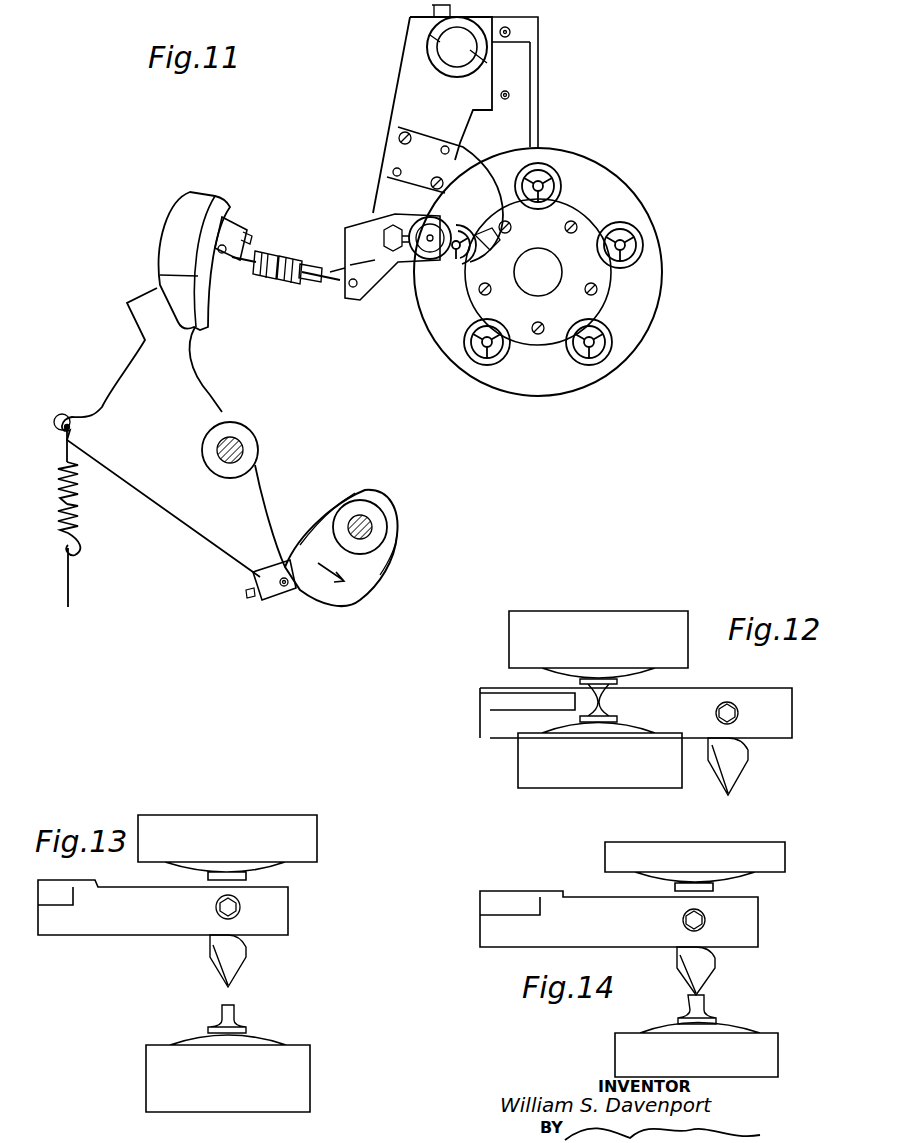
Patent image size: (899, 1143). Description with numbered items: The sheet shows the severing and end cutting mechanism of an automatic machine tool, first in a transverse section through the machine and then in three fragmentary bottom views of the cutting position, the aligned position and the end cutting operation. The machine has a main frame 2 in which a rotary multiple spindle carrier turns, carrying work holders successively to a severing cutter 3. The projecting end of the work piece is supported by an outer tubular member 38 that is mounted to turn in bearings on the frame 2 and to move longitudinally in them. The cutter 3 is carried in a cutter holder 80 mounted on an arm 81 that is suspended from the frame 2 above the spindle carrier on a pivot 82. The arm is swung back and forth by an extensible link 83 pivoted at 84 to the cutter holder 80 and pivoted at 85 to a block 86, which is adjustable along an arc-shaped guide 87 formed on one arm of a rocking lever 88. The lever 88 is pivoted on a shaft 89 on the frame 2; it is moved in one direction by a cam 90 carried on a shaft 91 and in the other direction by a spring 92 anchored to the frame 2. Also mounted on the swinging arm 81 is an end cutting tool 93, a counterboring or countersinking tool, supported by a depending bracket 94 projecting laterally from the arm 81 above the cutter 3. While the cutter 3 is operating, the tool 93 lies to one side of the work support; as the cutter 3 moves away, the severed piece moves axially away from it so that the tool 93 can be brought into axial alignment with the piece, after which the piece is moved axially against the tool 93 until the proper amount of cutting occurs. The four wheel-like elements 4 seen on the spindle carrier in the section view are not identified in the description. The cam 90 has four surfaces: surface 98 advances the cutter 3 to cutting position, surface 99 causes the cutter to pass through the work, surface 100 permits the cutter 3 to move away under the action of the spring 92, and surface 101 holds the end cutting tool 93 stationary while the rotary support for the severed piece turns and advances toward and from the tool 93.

In FIG. 11, the frame 2 is at (538, 33).
In FIG. 12, the severing cutter 3 is at (600, 695).
In FIG. 13, the severing cutter 3 is at (108, 887).
In FIG. 14, the severing cutter 3 is at (550, 900).
In FIG. 11, the roller wheel 4 is at (553, 158).
In FIG. 12, the roller wheel 4 is at (634, 620).
In FIG. 13, the roller wheel 4 is at (315, 838).
In FIG. 14, the roller wheel 4 is at (724, 852).
In FIG. 12, the outer tubular member 38 is at (641, 778).
In FIG. 13, the outer tubular member 38 is at (147, 1070).
In FIG. 14, the outer tubular member 38 is at (615, 1057).
In FIG. 11, the cutter holder 80 is at (412, 258).
In FIG. 11, the arm 81 is at (408, 101).
In FIG. 11, the pivot 82 is at (470, 50).
In FIG. 11, the extensible link 83 is at (283, 280).
In FIG. 11, the pivot 84 is at (355, 290).
In FIG. 11, the pivot 85 is at (235, 235).
In FIG. 11, the block 86 is at (225, 244).
In FIG. 11, the arc-shaped guide 87 is at (175, 270).
In FIG. 11, the rocking lever 88 is at (200, 382).
In FIG. 11, the shaft 89 is at (243, 450).
In FIG. 11, the cam 90 is at (357, 603).
In FIG. 11, the shaft 91 is at (375, 526).
In FIG. 11, the spring 92 is at (58, 512).
In FIG. 11, the end cutting tool 93 is at (486, 250).
In FIG. 12, the end cutting tool 93 is at (727, 770).
In FIG. 13, the end cutting tool 93 is at (236, 968).
In FIG. 14, the end cutting tool 93 is at (704, 980).
In FIG. 11, the depending bracket 94 is at (468, 165).
In FIG. 12, the depending bracket 94 is at (700, 702).
In FIG. 13, the depending bracket 94 is at (139, 928).
In FIG. 14, the depending bracket 94 is at (580, 900).
In FIG. 11, the cam surface 98 is at (392, 578).
In FIG. 11, the cam surface 99 is at (320, 596).
In FIG. 11, the cam surface 100 is at (310, 520).
In FIG. 11, the cam surface 101 is at (388, 502).